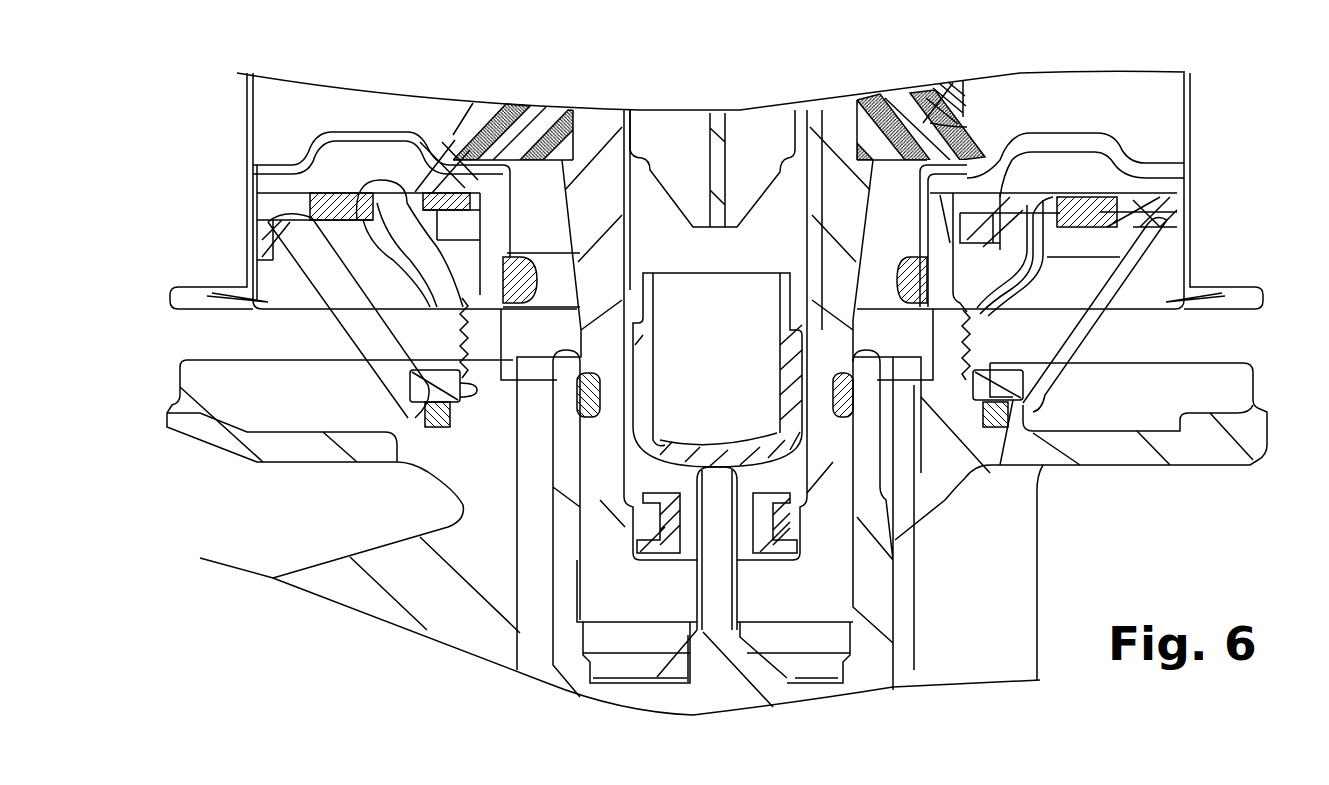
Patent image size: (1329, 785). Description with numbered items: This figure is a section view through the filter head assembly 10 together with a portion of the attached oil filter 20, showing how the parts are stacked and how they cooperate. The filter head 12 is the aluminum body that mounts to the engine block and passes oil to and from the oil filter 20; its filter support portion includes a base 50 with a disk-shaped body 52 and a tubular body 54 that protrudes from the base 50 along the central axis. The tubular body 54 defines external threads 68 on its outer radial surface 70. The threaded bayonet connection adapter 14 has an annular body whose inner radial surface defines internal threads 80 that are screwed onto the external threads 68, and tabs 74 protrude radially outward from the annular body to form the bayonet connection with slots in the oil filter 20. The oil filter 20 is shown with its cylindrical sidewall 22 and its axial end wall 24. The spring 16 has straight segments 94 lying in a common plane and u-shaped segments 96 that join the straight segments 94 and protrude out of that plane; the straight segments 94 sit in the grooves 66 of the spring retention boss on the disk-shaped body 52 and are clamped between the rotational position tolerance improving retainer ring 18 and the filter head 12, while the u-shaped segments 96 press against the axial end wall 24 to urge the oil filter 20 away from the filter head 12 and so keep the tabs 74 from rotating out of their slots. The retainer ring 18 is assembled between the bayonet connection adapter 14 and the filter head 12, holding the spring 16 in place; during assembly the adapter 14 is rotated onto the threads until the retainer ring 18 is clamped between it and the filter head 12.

The filter head assembly 10 is at (1255, 320).
The filter head 12 is at (1265, 410).
The threaded bayonet connection adapter 14 is at (411, 288).
The spring 16 is at (366, 383).
The rotational position tolerance improving retainer ring 18 is at (432, 374).
The oil filter 20 is at (1190, 112).
The cylindrical sidewall 22 is at (1195, 150).
The axial end wall 24 is at (1165, 210).
The base 50 is at (166, 433).
The disk-shaped body 52 is at (1140, 428).
The tubular body 54 is at (943, 257).
The grooves 66 is at (440, 408).
The external threads 68 is at (978, 400).
The outer radial surface 70 is at (477, 240).
The tabs 74 is at (382, 200).
The internal threads 80 is at (958, 305).
The straight segments 94 is at (1000, 428).
The u-shaped segments 96 is at (345, 325).